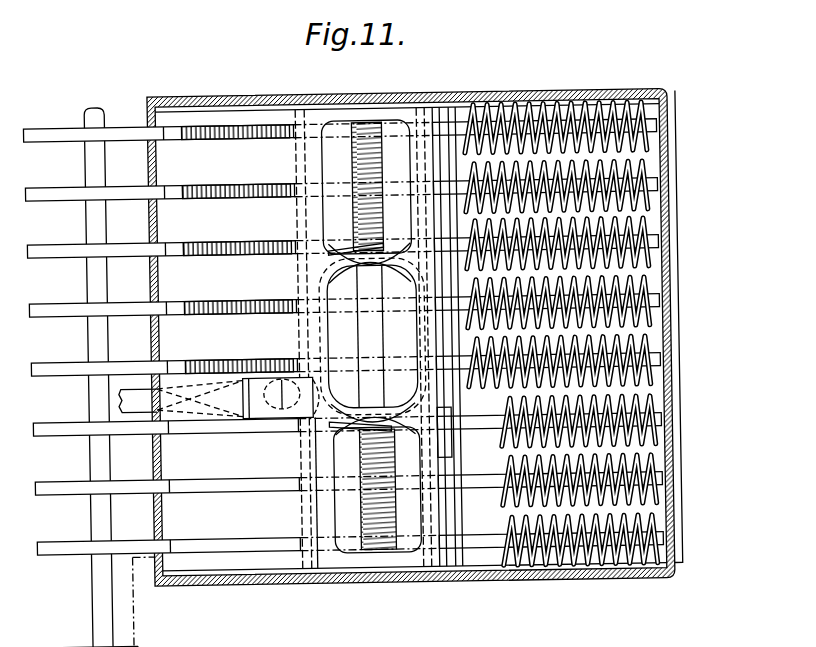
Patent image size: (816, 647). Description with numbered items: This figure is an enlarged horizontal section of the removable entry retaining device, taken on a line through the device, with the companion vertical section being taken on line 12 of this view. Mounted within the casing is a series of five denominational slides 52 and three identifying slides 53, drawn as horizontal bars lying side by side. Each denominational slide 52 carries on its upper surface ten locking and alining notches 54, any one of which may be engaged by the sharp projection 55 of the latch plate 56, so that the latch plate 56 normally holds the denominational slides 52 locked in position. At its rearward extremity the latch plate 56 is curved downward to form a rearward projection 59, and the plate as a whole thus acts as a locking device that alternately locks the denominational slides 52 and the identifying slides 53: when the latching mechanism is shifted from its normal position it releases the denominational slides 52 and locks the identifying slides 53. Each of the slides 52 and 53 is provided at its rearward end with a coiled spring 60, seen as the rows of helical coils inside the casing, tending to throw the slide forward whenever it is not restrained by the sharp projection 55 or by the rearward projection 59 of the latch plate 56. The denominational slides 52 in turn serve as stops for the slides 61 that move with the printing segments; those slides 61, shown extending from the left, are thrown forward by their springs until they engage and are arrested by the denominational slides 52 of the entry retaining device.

The section line 12 is at (684, 563).
The denominational slides 52 is at (183, 138).
The identifying slides 53 is at (268, 481).
The locking and alining notches 54 is at (224, 239).
The sharp projection 55 is at (228, 194).
The latch plate 56 is at (317, 336).
The rearward projection 59 is at (435, 459).
The coiled spring 60 is at (579, 100).
The slides 61 is at (58, 130).